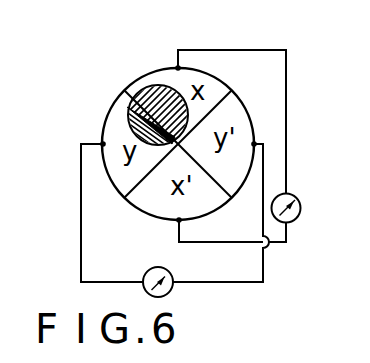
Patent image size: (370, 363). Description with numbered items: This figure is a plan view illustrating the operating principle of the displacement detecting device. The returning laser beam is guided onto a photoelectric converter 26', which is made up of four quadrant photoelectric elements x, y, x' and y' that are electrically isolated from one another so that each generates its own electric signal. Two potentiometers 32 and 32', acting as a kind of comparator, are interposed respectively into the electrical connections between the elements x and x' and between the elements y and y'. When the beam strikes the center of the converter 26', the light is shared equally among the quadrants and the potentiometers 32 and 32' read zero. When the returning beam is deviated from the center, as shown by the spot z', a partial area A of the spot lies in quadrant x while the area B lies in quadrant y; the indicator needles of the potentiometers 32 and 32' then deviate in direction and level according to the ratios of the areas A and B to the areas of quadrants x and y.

The photoelectric converter 26' is at (194, 141).
The potentiometer 32 is at (296, 189).
The potentiometer 32' is at (180, 300).
The partial area of the spot A is at (160, 101).
The area of the spot B is at (130, 113).
The deviated light spot z' is at (133, 101).